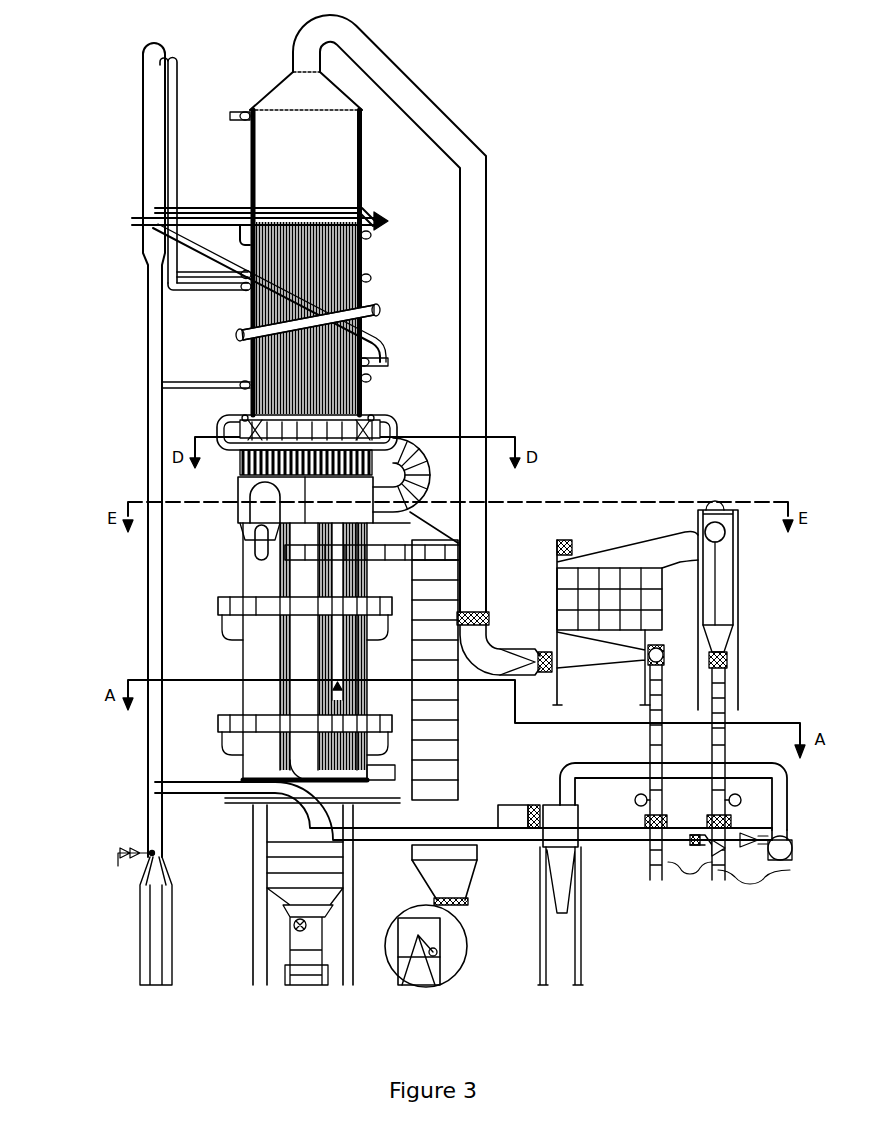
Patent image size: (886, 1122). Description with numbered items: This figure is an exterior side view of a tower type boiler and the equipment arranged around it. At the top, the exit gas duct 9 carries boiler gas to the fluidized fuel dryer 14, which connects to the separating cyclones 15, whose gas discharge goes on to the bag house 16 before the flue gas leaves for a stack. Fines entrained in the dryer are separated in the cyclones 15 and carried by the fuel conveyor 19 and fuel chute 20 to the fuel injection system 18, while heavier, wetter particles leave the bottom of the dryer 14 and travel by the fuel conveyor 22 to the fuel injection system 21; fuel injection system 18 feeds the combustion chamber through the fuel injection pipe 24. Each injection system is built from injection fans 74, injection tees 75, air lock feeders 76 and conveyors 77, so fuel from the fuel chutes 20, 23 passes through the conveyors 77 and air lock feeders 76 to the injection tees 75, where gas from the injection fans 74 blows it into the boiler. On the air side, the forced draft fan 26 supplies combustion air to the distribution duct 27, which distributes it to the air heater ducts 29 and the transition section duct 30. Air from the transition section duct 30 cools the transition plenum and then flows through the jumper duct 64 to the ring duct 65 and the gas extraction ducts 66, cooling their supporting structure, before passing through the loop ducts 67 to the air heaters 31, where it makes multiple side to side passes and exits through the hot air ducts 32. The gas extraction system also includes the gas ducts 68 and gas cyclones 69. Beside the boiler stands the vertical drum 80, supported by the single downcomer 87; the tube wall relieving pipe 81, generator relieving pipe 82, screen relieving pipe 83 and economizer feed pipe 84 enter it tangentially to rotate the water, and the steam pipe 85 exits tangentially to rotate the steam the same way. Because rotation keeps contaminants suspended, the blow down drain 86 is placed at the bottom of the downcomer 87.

The exit gas duct 9 is at (487, 220).
The fluidized fuel dryer 14 is at (598, 560).
The separating cyclones 15 is at (728, 612).
The bag house 16 is at (738, 548).
The fuel injection system 18 is at (754, 891).
The fuel conveyor 19 is at (733, 660).
The fuel chute 20 is at (725, 712).
The fuel injection system 21 is at (690, 882).
The fuel conveyor 22 is at (648, 660).
The fuel chute 23 is at (648, 745).
The fuel injection pipe 24 is at (497, 845).
The forced draft fan 26 is at (455, 962).
The distribution duct 27 is at (440, 705).
The air heater ducts 29 is at (415, 550).
The transition section duct 30 is at (430, 425).
The air heaters 31 is at (243, 662).
The hot air ducts 32 is at (280, 690).
The jumper duct 64 is at (415, 470).
The ring duct 65 is at (238, 487).
The gas extraction ducts 66 is at (255, 518).
The loop ducts 67 is at (256, 545).
The gas ducts 68 is at (262, 800).
The gas cyclones 69 is at (570, 895).
The injection fans 74 is at (790, 858).
The injection tees 75 is at (695, 842).
The air lock feeders 76 is at (731, 822).
The conveyors 77 is at (740, 800).
The vertical drum 80 is at (143, 78).
The tube wall relieving pipe 81 is at (160, 208).
The generator relieving pipe 82 is at (135, 220).
The screen relieving pipe 83 is at (158, 232).
The economizer feed pipe 84 is at (172, 292).
The steam pipe 85 is at (180, 68).
The blow down drain 86 is at (128, 868).
The downcomer 87 is at (243, 625).